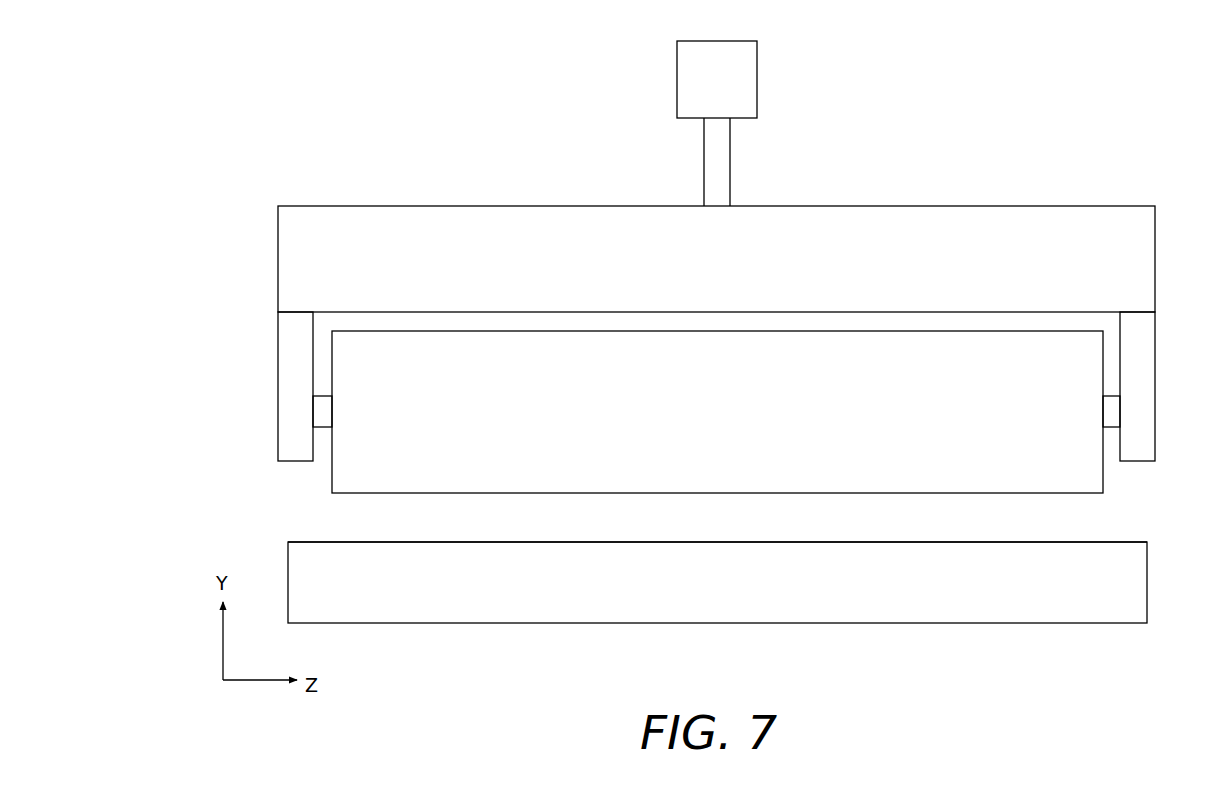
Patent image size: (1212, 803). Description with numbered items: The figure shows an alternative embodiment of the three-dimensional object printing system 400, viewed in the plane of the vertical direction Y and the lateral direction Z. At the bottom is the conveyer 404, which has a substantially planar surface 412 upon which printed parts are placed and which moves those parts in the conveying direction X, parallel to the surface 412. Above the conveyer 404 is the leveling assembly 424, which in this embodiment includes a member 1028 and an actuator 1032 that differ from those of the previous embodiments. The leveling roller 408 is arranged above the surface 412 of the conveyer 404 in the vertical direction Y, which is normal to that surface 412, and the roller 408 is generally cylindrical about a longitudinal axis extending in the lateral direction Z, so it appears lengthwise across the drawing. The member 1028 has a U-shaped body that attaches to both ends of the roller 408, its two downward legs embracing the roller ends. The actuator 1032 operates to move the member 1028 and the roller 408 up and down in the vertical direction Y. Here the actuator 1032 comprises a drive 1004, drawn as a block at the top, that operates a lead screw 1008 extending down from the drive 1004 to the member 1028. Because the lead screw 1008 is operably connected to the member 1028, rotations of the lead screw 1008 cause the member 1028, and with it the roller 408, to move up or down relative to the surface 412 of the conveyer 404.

The three-dimensional object printing system 400 is at (409, 122).
The leveling assembly 424 is at (524, 140).
The member 1028 is at (377, 206).
The leveling roller 408 is at (362, 470).
The conveyer 404 is at (413, 623).
The surface 412 is at (1097, 541).
The actuator 1032 is at (786, 118).
The drive 1004 is at (677, 80).
The lead screw 1008 is at (704, 163).